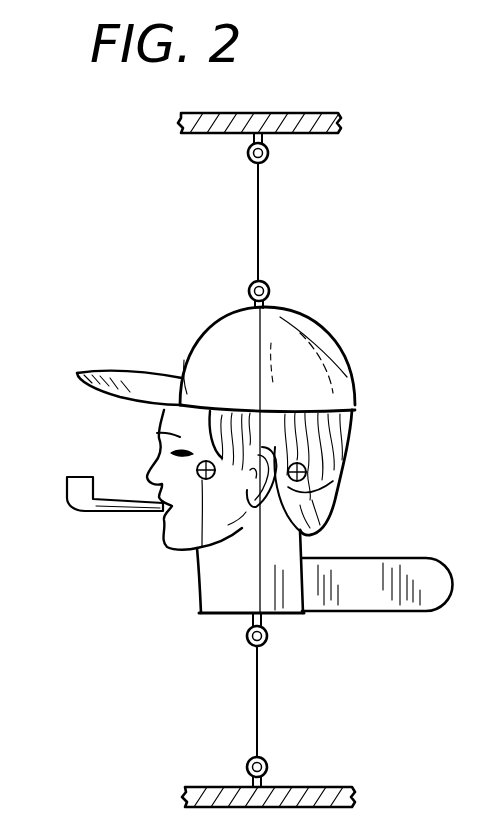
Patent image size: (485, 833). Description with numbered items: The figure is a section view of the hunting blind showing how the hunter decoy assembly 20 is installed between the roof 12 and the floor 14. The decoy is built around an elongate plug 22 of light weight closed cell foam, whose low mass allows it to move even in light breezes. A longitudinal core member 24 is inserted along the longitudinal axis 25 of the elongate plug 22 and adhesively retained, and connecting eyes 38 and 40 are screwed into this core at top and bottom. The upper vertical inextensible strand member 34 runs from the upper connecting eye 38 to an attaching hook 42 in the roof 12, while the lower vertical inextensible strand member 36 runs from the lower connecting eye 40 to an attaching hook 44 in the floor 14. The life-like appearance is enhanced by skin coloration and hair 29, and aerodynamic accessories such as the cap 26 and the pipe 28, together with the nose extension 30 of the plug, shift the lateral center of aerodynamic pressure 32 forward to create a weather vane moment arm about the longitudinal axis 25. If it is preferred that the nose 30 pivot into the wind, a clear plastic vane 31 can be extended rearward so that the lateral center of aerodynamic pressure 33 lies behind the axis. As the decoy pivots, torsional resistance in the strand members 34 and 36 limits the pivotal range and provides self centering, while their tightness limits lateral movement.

The roof 12 is at (194, 133).
The floor 14 is at (207, 785).
The hunter decoy assembly 20 is at (345, 331).
The elongate plug 22 is at (165, 416).
The longitudinal core member 24 is at (288, 548).
The longitudinal axis 25 is at (258, 357).
The cap 26 is at (214, 327).
The pipe 28 is at (83, 511).
The hair 29 is at (351, 432).
The nose extension 30 is at (158, 475).
The clear plastic vane 31 is at (383, 612).
The lateral center of aerodynamic pressure 32 is at (195, 553).
The lateral center of aerodynamic pressure 33 is at (334, 481).
The upper vertical inextensible strand member 34 is at (260, 213).
The lower vertical inextensible strand member 36 is at (258, 705).
The connecting eye 38 is at (266, 286).
The connecting eye 40 is at (268, 640).
The attaching hook 42 is at (248, 154).
The attaching hook 44 is at (268, 767).